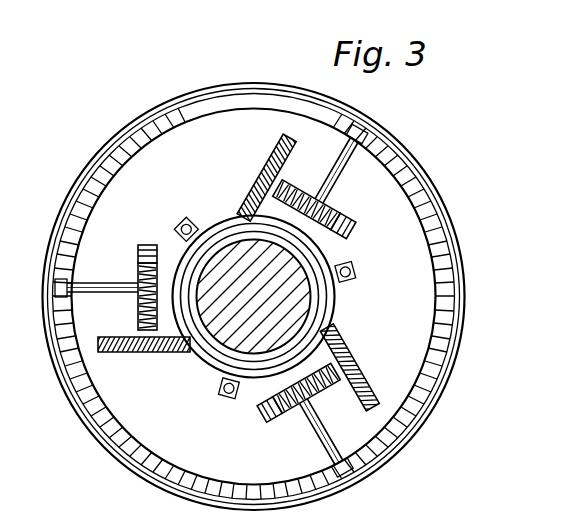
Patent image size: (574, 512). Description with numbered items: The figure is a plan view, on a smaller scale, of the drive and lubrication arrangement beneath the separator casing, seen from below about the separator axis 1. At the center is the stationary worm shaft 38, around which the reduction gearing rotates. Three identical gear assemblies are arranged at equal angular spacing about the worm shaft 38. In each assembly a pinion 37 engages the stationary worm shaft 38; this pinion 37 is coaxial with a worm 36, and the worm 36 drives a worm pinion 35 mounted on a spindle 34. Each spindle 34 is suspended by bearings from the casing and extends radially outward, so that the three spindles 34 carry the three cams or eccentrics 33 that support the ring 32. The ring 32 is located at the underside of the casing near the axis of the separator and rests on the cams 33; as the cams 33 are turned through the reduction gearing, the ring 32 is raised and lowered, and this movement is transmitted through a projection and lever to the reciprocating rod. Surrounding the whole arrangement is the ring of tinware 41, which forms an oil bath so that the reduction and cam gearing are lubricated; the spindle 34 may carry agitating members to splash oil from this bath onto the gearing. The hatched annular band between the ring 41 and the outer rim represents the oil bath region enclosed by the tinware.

The shaft 1 is at (222, 352).
The ring 32 is at (148, 138).
The cams or eccentrics 33 is at (68, 266).
The spindles 34 is at (327, 164).
The worm pinion 35 is at (147, 244).
The worm 36 is at (141, 328).
The pinion 37 is at (265, 160).
The worm shaft 38 is at (322, 251).
The ring of tinware 41 is at (156, 108).